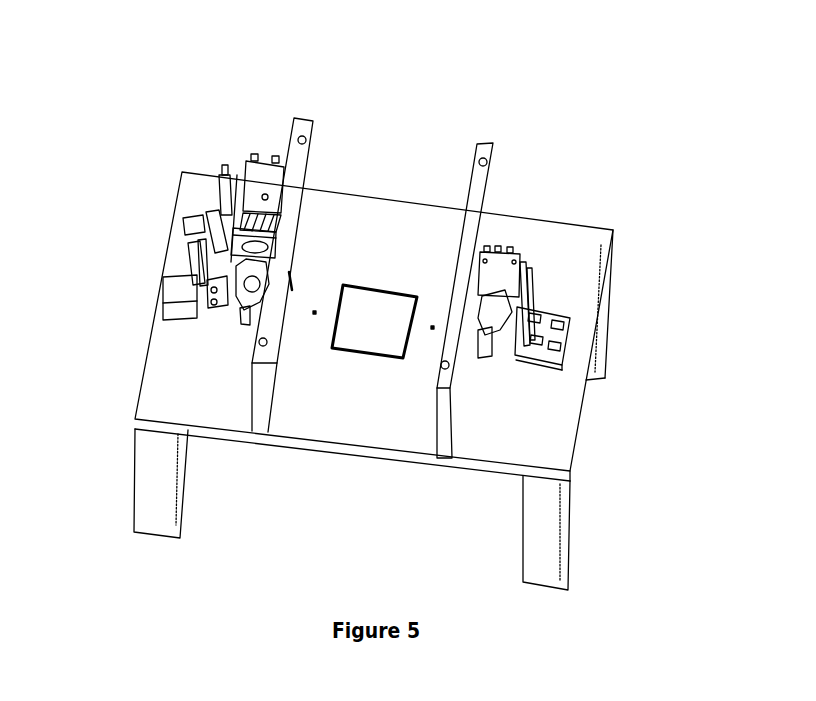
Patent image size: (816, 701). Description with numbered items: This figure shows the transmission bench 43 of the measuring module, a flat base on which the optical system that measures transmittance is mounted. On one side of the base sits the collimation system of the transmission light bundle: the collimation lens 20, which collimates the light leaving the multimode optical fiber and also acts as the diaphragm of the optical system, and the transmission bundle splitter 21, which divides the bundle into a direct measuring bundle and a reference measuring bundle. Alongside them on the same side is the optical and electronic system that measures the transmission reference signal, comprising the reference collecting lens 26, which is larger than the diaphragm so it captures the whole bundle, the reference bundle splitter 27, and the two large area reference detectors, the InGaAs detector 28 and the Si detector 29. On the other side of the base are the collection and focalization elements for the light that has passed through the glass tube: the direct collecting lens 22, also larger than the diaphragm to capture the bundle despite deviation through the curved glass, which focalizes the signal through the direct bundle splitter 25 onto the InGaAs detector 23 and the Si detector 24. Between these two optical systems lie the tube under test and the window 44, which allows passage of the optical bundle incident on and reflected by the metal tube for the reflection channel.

The collimation lens, transmission channel 20 is at (203, 245).
The transmission bundle splitter to obtain reference 21 is at (242, 312).
The collecting lens for the direct measuring of the transmission channel 22 is at (472, 285).
The InGaAs detector for the direct measuring of the transmission channel 23 is at (533, 280).
The Si detector for the direct measuring of the transmission channel 24 is at (502, 250).
The transmission bundle splitter for direct measuring 25 is at (505, 347).
The collecting lens for the reference measuring of the transmission channel 26 is at (212, 195).
The transmission bundle splitter for the reference measuring 27 is at (243, 192).
The InGaAs detector for the reference measuring of the transmission channel 28 is at (262, 170).
The Si detector for the reference measuring of the transmission channel 29 is at (220, 172).
The transmission bench 43 is at (371, 436).
The window for the passage of the reflection bundle 44 is at (368, 305).